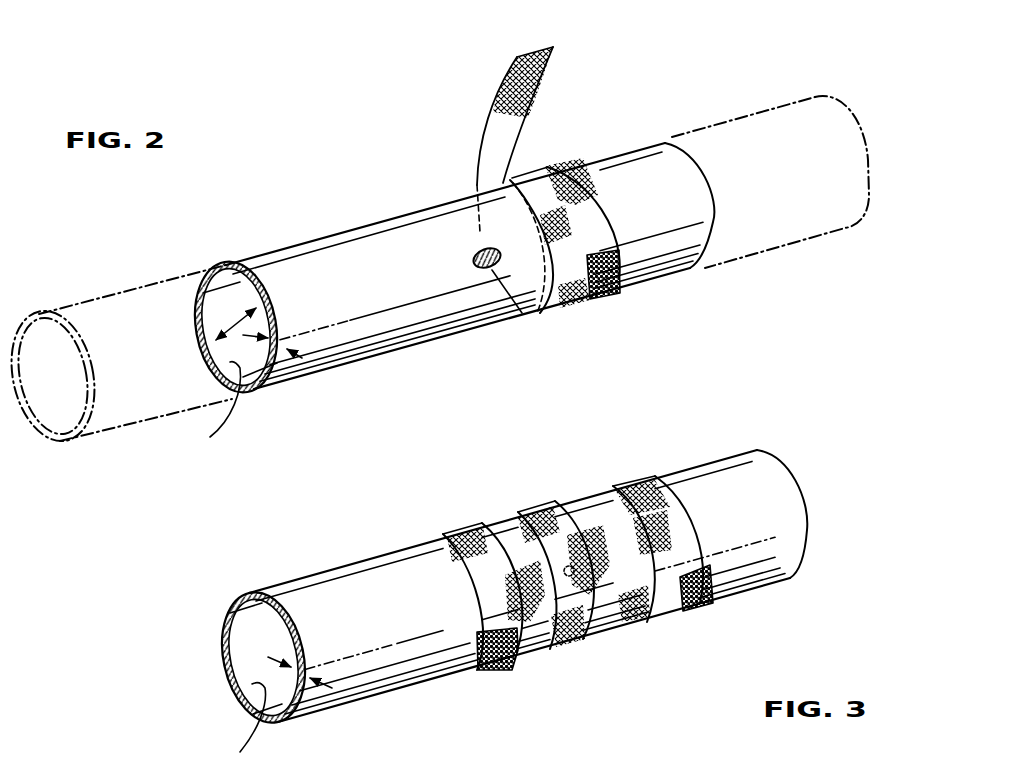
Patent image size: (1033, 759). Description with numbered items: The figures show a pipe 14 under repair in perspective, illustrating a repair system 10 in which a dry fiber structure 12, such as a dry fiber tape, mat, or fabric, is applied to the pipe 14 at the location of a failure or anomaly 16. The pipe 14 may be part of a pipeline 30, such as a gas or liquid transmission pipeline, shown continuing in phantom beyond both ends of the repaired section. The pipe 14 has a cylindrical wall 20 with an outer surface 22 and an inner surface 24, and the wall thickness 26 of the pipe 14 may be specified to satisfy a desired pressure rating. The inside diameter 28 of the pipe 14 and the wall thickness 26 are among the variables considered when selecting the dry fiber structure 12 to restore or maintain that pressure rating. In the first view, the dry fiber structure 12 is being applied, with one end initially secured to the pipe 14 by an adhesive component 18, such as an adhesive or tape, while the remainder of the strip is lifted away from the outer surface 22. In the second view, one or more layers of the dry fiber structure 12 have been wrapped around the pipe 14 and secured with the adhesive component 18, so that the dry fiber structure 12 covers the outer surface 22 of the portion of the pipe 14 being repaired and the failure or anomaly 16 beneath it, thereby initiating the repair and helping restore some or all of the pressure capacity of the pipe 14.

In FIG. 2, the repair system 10 is at (692, 74).
In FIG. 3, the repair system 10 is at (852, 508).
In FIG. 2, the dry fiber structure 12 is at (503, 117).
In FIG. 3, the dry fiber structure 12 is at (531, 515).
In FIG. 2, the pipe 14 is at (357, 193).
In FIG. 3, the pipe 14 is at (617, 672).
In FIG. 2, the failure or anomaly 16 is at (490, 268).
In FIG. 3, the failure or anomaly 16 is at (574, 550).
In FIG. 2, the adhesive component 18 is at (603, 293).
In FIG. 3, the adhesive component 18 is at (495, 662).
In FIG. 2, the cylindrical wall 20 is at (230, 266).
In FIG. 3, the cylindrical wall 20 is at (254, 592).
In FIG. 2, the outer surface 22 is at (612, 158).
In FIG. 3, the outer surface 22 is at (760, 480).
In FIG. 2, the inner surface 24 is at (210, 406).
In FIG. 3, the inner surface 24 is at (237, 721).
In FIG. 2, the wall thickness 26 is at (278, 332).
In FIG. 3, the wall thickness 26 is at (300, 670).
In FIG. 2, the inside diameter 28 is at (230, 325).
In FIG. 2, the pipeline 30 is at (98, 292).